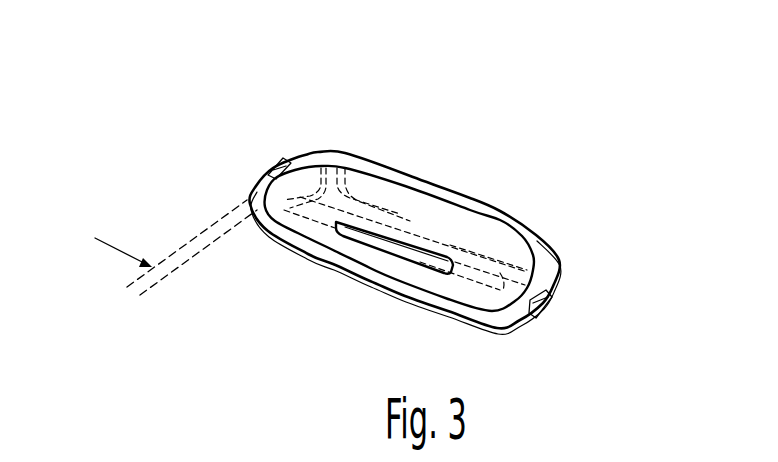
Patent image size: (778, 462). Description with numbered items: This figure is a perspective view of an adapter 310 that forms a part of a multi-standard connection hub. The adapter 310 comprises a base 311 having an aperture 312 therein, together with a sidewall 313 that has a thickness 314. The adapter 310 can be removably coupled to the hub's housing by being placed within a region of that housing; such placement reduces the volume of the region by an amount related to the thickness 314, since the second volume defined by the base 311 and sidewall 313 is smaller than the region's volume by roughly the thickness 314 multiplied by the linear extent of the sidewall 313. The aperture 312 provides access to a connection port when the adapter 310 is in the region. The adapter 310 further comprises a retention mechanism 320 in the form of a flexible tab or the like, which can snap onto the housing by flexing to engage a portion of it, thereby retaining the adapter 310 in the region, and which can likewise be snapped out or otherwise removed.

The adapter 310 is at (99, 74).
The base 311 is at (467, 287).
The aperture 312 is at (378, 247).
The sidewall 313 is at (503, 217).
The thickness 314 is at (172, 282).
The retention mechanism 320 is at (271, 167).